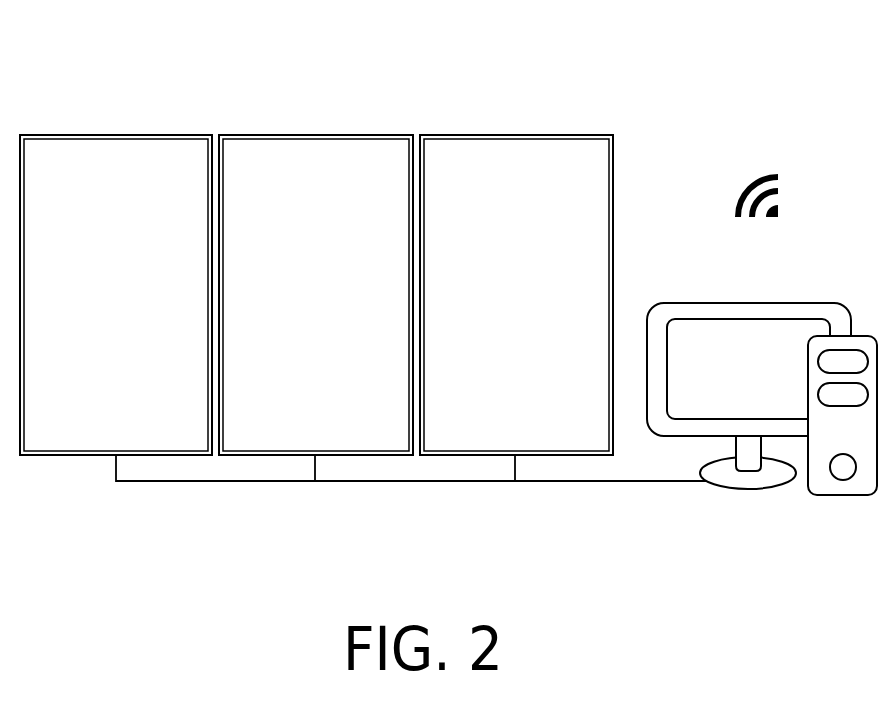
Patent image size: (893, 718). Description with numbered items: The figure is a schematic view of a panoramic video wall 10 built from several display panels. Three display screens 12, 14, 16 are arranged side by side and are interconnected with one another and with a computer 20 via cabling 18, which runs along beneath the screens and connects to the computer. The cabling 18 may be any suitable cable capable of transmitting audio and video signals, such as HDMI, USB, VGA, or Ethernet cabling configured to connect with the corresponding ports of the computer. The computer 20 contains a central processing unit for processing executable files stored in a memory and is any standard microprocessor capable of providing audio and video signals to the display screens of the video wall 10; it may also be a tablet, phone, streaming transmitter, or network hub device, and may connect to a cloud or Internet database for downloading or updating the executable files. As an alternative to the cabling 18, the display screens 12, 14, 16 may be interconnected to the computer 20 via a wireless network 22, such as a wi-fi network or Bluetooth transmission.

The panoramic video wall 10 is at (611, 85).
The display screen 12 is at (114, 157).
The display screen 14 is at (313, 157).
The display screen 16 is at (513, 157).
The cabling 18 is at (376, 483).
The computer 20 is at (840, 497).
The wireless network 22 is at (750, 180).